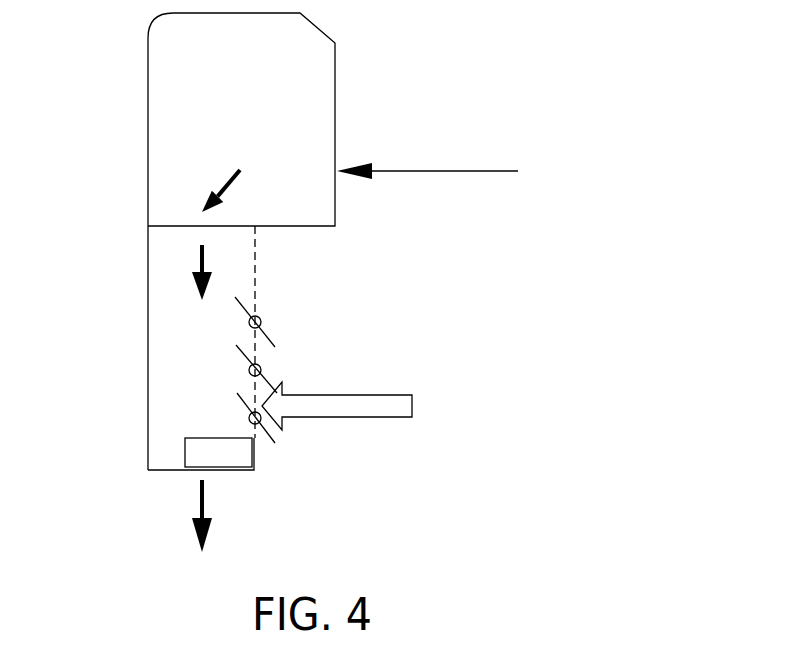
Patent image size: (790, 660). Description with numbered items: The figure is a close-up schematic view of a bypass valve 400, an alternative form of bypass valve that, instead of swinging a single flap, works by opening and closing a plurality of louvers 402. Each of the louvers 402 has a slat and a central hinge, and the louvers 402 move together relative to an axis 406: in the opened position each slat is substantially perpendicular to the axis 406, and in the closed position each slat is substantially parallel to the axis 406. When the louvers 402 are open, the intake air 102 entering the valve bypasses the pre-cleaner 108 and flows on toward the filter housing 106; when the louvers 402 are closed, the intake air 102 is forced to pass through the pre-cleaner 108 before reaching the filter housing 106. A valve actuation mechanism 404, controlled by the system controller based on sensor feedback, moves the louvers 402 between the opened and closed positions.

The intake air 102 is at (445, 168).
The filter housing 106 is at (200, 497).
The pre-cleaner 108 is at (168, 68).
The bypass valve 400 is at (116, 257).
The louvers 402 is at (248, 322).
The valve actuation mechanism 404 is at (257, 452).
The axis 406 is at (257, 272).